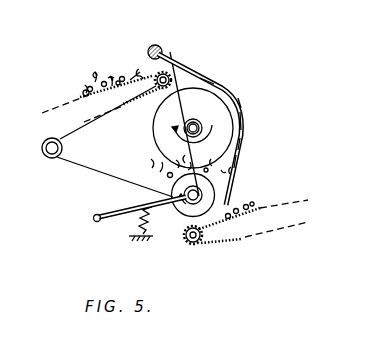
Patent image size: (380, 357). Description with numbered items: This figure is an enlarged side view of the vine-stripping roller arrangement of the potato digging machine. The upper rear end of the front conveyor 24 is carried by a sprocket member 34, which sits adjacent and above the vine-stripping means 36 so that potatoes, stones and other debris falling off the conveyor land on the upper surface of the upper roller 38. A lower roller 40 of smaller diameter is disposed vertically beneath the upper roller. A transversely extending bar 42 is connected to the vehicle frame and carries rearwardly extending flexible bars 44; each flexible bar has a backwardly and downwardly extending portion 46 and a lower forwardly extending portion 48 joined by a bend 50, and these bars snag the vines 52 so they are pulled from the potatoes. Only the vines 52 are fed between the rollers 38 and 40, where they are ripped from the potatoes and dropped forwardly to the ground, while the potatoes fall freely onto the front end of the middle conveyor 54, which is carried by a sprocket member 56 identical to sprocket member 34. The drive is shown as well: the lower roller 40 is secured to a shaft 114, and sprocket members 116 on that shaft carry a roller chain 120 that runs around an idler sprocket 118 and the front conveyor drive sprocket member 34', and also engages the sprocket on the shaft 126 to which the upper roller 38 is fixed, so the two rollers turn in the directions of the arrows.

The conveyor 24 is at (110, 76).
The sprocket member 34 is at (189, 111).
The front conveyor drive sprocket member 34' is at (199, 126).
The vine-stripping means 36 is at (246, 100).
The upper roller 38 is at (153, 126).
The lower roller 40 is at (176, 208).
The transversely extending bar 42 is at (153, 47).
The flexible bar 44 is at (243, 152).
The backwardly and downwardly extending portion 46 is at (214, 82).
The lower forwardly extending portion 48 is at (242, 166).
The bend 50 is at (243, 115).
The vines 52 is at (90, 86).
The conveyor 54 is at (241, 246).
The sprocket member 56 is at (186, 252).
The shaft 114 is at (232, 181).
The sprocket member 116 is at (232, 195).
The idler sprocket 118 is at (42, 146).
The roller chain 120 is at (76, 172).
The shaft 126 is at (202, 122).